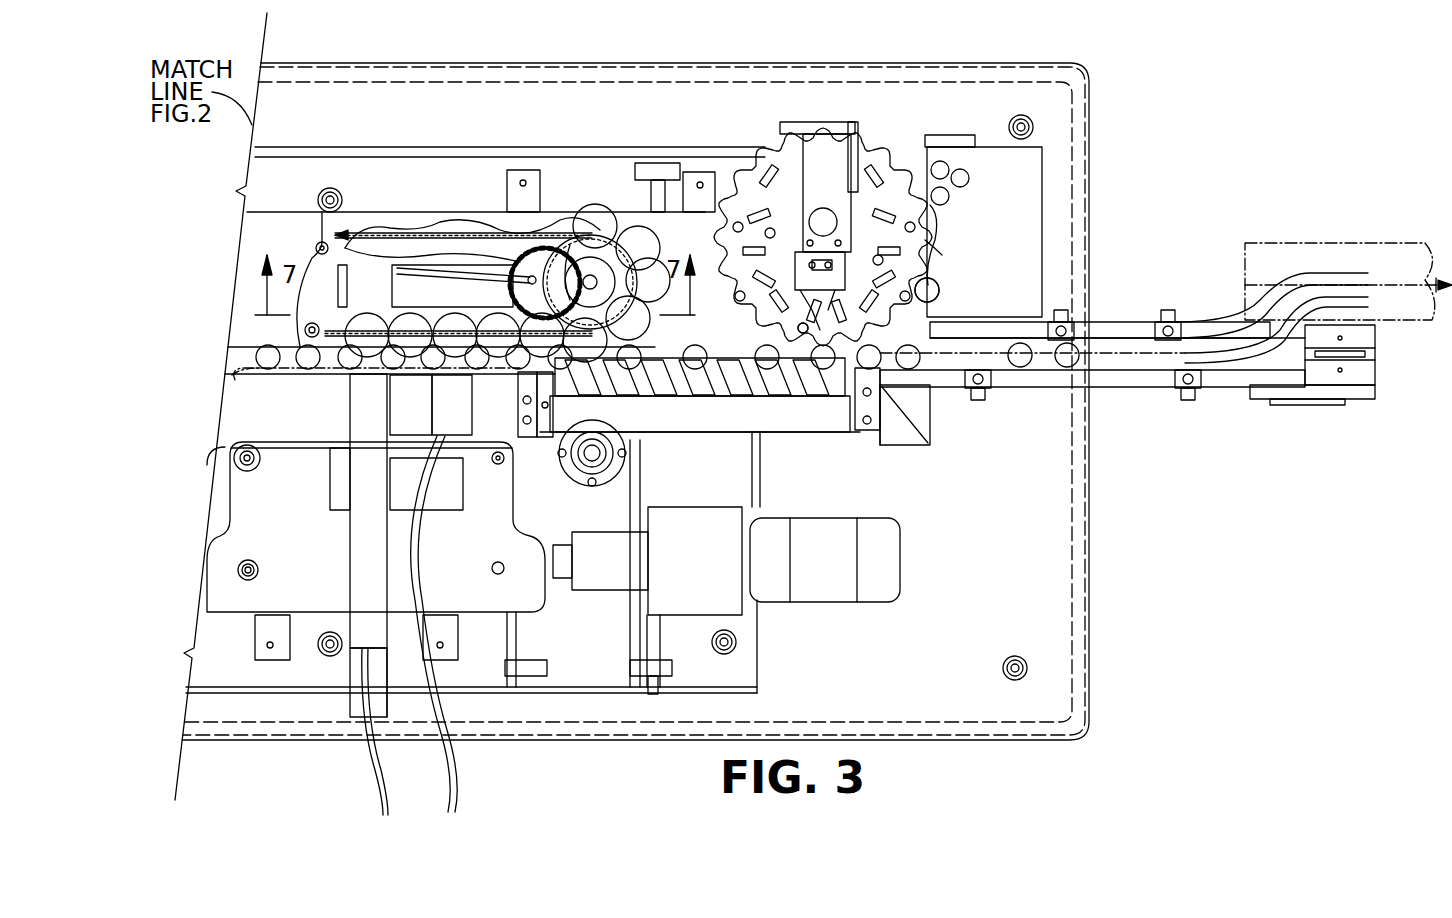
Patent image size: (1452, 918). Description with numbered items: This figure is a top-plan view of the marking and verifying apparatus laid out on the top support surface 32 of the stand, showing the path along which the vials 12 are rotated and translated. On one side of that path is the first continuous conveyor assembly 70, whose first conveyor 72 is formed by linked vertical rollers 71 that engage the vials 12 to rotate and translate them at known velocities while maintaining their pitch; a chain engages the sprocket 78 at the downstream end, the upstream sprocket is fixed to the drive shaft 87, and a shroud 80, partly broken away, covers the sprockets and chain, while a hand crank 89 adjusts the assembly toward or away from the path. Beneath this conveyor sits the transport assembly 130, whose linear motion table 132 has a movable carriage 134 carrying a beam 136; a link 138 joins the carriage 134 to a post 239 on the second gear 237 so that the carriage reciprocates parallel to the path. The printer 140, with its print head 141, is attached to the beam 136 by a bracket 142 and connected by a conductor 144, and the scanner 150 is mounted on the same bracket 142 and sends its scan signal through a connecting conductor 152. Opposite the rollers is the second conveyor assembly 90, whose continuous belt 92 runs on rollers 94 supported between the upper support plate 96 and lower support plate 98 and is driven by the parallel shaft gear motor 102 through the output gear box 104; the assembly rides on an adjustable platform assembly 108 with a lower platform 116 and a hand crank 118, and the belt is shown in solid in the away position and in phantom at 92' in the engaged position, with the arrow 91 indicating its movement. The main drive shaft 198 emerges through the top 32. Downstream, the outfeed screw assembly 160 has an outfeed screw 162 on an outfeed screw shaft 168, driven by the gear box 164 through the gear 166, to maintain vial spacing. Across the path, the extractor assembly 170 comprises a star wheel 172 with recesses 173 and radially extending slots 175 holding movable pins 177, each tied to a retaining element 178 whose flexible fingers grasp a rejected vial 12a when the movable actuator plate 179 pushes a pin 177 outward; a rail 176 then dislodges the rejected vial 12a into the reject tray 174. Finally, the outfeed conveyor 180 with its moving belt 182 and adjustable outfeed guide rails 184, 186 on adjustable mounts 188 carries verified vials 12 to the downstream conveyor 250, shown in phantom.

The vials 12 is at (268, 358).
The rejected vial 12a is at (938, 290).
The top support surface 32 is at (1034, 640).
The first continuous conveyor assembly 70 is at (330, 238).
The linked vertical rollers 71 is at (380, 330).
The first conveyor 72 is at (635, 243).
The sprocket 78 is at (535, 240).
The shroud 80 is at (268, 254).
The drive shaft 87 is at (590, 282).
The hand crank 89 is at (665, 670).
The second conveyor assembly 90 is at (247, 452).
The arrow 91 is at (306, 377).
The continuous belt 92 is at (331, 432).
The belt in engaged position 92' is at (254, 389).
The rollers 94 is at (292, 428).
The upper support plate 96 is at (307, 514).
The lower support plate 98 is at (232, 476).
The parallel shaft gear motor 102 is at (838, 538).
The 90° output gear box 104 is at (555, 580).
The adjustable platform assembly 108 is at (248, 620).
The lower platform 116 is at (739, 680).
The hand crank 118 is at (540, 668).
The transport assembly 130 is at (435, 250).
The linear motion table 132 is at (485, 240).
The movable carriage 134 is at (425, 270).
The beam 136 is at (350, 710).
The link 138 is at (490, 287).
The printer 140 is at (360, 630).
The print head 141 is at (385, 378).
The bracket 142 is at (452, 628).
The conductor 144 is at (378, 772).
The scanner 150 is at (460, 396).
The connecting conductor 152 is at (445, 752).
The outfeed screw assembly 160 is at (786, 434).
The outfeed screw 162 is at (818, 385).
The gear box 164 is at (912, 432).
The gear 166 is at (880, 380).
The outfeed screw shaft 168 is at (925, 420).
The extractor assembly 170 is at (822, 135).
The star wheel 172 is at (738, 170).
The recesses 173 is at (942, 222).
The reject tray 174 is at (1030, 230).
The radially extending slots 175 is at (968, 178).
The rail 176 is at (930, 240).
The movable pins 177 is at (888, 200).
The retaining elements 178 is at (927, 280).
The movable actuator plate 179 is at (840, 330).
The outfeed conveyor 180 is at (1118, 393).
The moving belt 182 is at (1280, 385).
The outfeed guide rail 184 is at (1150, 385).
The outfeed guide rail 186 is at (1290, 300).
The adjustable mounts 188 is at (1062, 310).
The main drive shaft 198 is at (592, 475).
The second gear 237 is at (565, 250).
The post 239 is at (545, 266).
The downstream conveyor 250 is at (1382, 255).